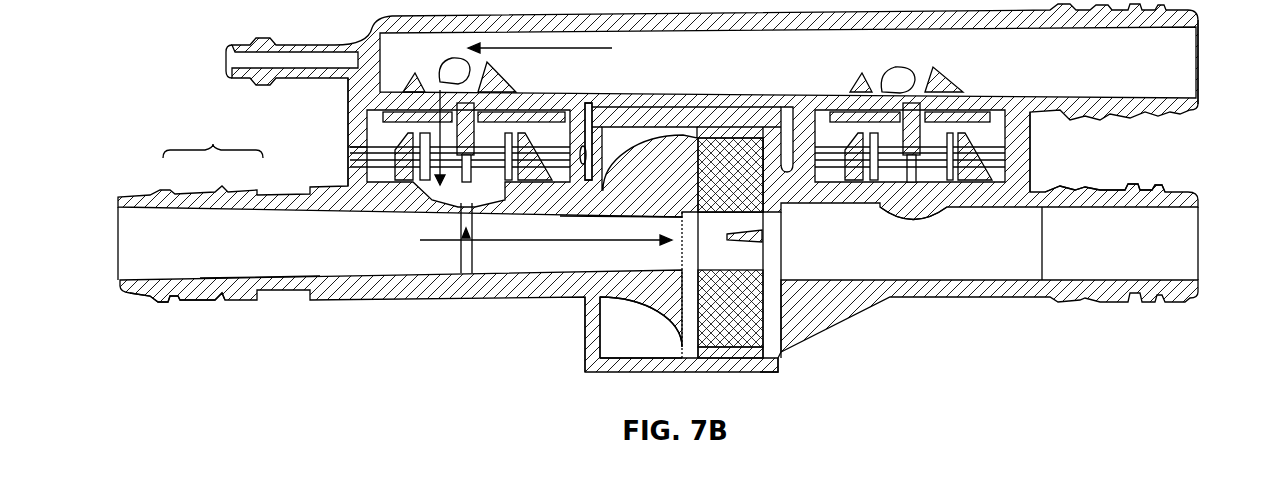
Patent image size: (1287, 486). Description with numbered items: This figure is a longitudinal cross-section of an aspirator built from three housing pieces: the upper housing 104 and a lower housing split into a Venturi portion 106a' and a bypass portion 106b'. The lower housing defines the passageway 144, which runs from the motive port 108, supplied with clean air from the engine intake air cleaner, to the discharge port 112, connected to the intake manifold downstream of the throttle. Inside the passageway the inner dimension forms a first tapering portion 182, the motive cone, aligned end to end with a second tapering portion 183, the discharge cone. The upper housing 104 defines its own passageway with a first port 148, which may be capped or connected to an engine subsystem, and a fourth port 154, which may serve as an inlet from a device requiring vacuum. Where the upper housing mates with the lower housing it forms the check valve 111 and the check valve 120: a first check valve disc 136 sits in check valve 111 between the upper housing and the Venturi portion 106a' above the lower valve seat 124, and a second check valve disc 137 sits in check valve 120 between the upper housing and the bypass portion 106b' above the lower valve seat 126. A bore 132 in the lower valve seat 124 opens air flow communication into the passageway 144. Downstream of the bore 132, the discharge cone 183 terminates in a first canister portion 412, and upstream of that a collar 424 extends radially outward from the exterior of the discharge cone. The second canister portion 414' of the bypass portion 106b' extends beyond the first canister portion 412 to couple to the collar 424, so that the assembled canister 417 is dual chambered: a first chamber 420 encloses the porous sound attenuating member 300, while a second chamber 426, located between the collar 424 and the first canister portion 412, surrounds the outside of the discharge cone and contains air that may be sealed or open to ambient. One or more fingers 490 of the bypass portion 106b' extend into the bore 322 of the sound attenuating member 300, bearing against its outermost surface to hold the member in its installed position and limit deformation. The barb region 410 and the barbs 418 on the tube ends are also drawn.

The upper housing 104 is at (362, 23).
The Venturi portion 106a' is at (449, 321).
The bypass portion 106b' is at (989, 316).
The motive port 108 is at (125, 262).
The discharge port 112 is at (1190, 262).
The fourth port 154 is at (1194, 36).
The first port 148 is at (237, 57).
The check valve 111 is at (346, 134).
The barb region 410 is at (213, 139).
The lower valve seat 124 is at (356, 185).
The first check valve disc 136 is at (585, 103).
The second check valve disc 137 is at (990, 110).
The check valve 120 is at (1030, 130).
The lower valve seat 126 is at (1025, 192).
The barbs 418 is at (1165, 190).
The first tapering portion 182 is at (160, 298).
The passageway 144 is at (258, 265).
The bore 132 is at (470, 263).
The second tapering portion 183 is at (596, 262).
The collar 424 is at (588, 338).
The second chamber 426 is at (605, 362).
The first canister portion 412 is at (690, 345).
The sound attenuating member 300 is at (785, 332).
The bore 322 is at (757, 306).
The finger 490 is at (747, 240).
The second canister portion 414' is at (730, 377).
The canister 417 is at (762, 372).
The first chamber 420 is at (775, 361).